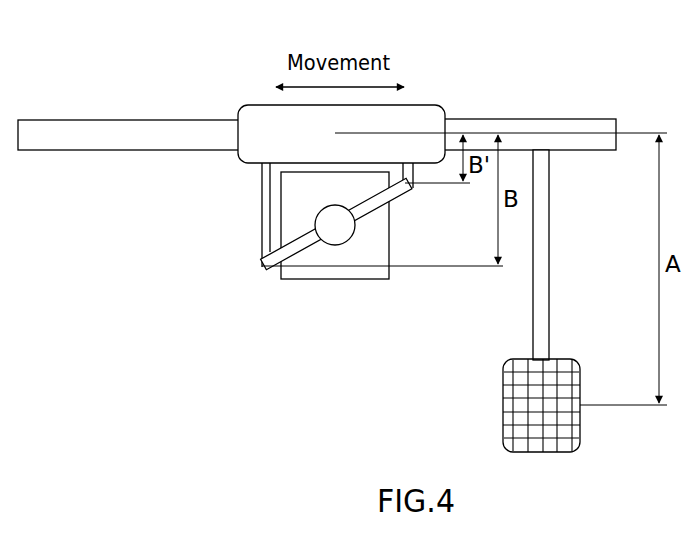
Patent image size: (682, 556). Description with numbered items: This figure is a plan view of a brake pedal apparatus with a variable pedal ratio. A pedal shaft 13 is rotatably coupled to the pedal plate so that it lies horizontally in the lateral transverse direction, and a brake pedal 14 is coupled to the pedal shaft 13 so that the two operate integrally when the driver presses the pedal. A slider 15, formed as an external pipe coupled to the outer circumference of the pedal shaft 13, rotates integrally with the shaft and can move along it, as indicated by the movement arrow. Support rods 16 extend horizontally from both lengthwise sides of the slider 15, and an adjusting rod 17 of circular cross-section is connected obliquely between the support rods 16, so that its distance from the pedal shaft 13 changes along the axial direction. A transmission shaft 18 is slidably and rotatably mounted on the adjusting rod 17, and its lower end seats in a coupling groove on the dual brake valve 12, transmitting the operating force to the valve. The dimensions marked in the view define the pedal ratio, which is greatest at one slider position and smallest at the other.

The dual brake valve 12 is at (295, 280).
The pedal shaft 13 is at (113, 128).
The brake pedal 14 is at (543, 293).
The slider 15 is at (430, 115).
The support rods 16 is at (267, 193).
The adjusting rod 17 is at (297, 248).
The transmission shaft 18 is at (340, 238).